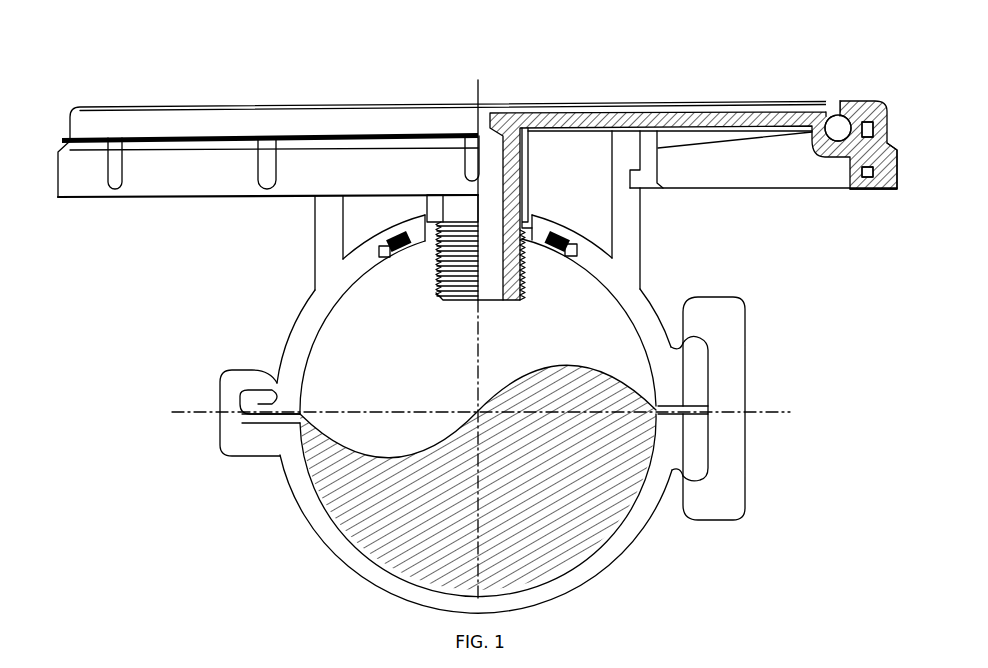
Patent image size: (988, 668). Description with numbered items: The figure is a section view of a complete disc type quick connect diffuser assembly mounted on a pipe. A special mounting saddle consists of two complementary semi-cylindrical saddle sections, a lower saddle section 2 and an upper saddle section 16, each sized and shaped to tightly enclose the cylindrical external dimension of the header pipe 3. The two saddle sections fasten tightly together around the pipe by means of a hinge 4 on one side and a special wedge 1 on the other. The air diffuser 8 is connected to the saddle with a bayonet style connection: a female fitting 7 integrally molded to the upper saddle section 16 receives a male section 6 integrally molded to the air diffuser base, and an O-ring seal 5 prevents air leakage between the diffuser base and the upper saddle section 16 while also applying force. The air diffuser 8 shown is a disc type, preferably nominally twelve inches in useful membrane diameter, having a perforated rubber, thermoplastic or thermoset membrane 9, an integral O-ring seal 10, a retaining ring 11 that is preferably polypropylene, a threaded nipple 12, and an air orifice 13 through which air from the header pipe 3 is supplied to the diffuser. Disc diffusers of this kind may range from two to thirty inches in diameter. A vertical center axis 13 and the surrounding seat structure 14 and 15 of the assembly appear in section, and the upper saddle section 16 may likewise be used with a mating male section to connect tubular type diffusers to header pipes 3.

The wedge 1 is at (747, 507).
The lower saddle section 2 is at (617, 563).
The header pipe 3 is at (540, 578).
The hinge 4 is at (218, 426).
The O-ring seal 5 is at (409, 258).
The male section 6 is at (661, 189).
The female fitting 7 is at (631, 192).
The air diffuser 8 is at (57, 180).
The membrane 9 is at (783, 112).
The integral O-ring seal 10 is at (834, 103).
The retaining ring 11 is at (882, 190).
The threaded nipple 12 is at (487, 302).
The air orifice 13 is at (481, 325).
The nut 14 is at (423, 198).
The cross member 15 is at (602, 126).
The upper saddle section 16 is at (296, 316).